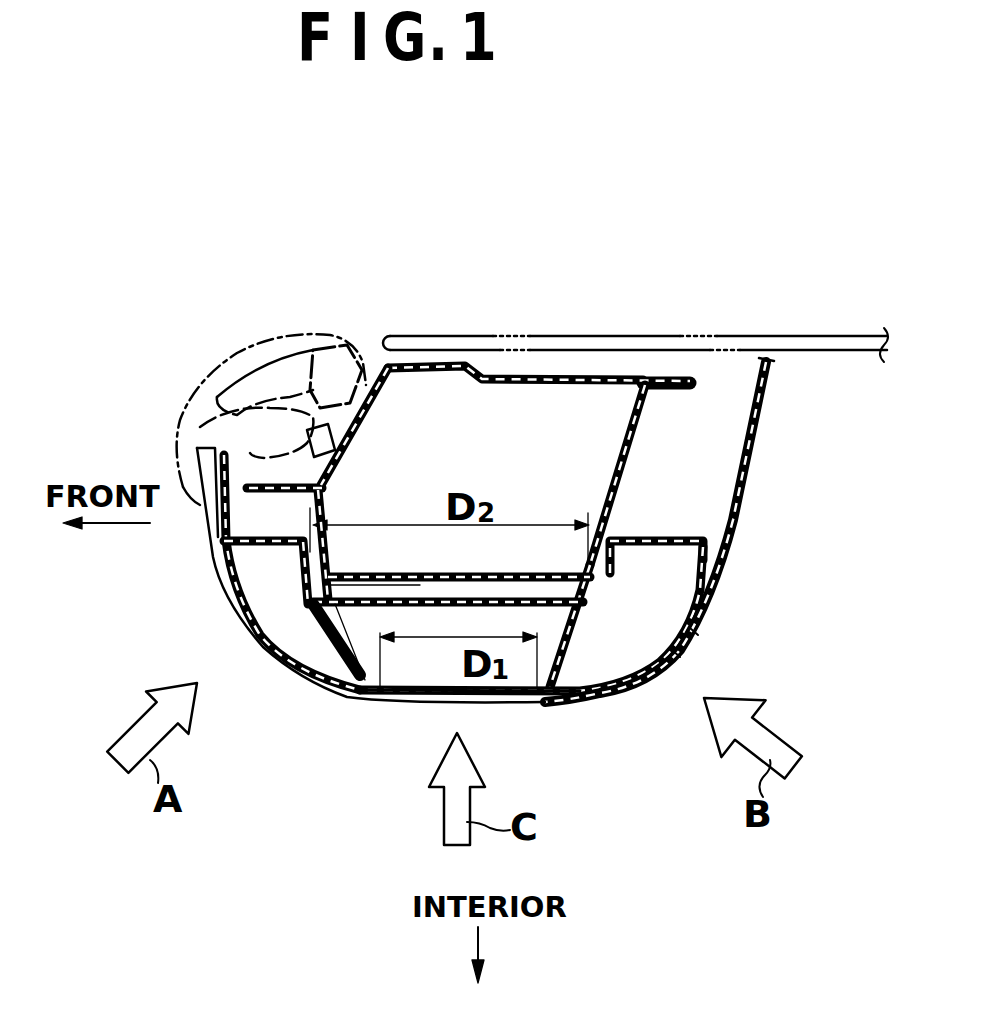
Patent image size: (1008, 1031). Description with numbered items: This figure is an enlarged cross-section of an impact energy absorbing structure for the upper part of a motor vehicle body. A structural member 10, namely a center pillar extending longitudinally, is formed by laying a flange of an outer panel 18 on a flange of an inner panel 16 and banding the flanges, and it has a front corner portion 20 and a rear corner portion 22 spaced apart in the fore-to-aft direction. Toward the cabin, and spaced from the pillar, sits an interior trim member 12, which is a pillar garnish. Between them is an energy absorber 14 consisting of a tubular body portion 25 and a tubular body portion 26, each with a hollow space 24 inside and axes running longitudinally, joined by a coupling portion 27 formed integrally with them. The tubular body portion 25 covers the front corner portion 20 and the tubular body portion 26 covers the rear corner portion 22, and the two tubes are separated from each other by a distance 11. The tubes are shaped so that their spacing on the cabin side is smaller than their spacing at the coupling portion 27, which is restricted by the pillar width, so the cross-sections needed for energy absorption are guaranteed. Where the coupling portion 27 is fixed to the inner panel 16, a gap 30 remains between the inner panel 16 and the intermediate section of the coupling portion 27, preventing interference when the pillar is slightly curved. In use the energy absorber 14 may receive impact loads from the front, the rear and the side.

The structural member 10 is at (499, 366).
The distance 11 is at (427, 653).
The interior trim member 12 is at (546, 692).
The energy absorber 14 is at (650, 680).
The inner panel 16 is at (387, 577).
The outer panel 18 is at (627, 373).
The front corner portion 20 is at (312, 675).
The rear corner portion 22 is at (607, 568).
The hollow spaces 24 is at (257, 640).
The tubular body portion 25 is at (227, 602).
The tubular body portion 26 is at (688, 641).
The coupling portion 27 is at (493, 599).
The gap 30 is at (352, 672).